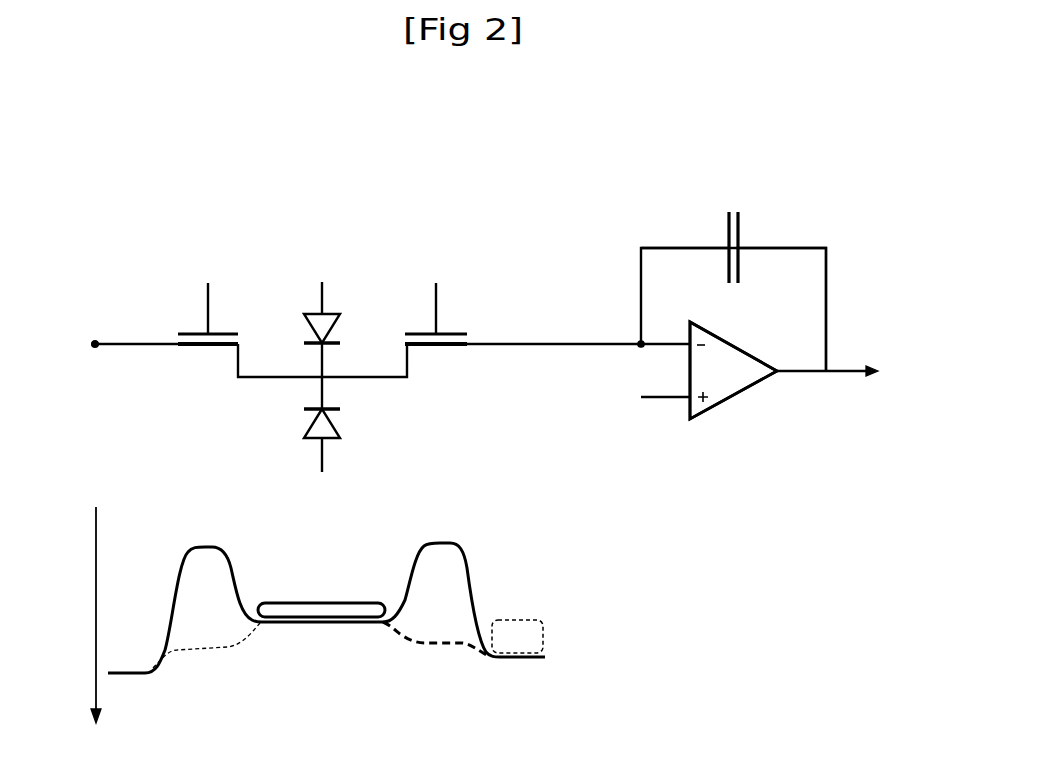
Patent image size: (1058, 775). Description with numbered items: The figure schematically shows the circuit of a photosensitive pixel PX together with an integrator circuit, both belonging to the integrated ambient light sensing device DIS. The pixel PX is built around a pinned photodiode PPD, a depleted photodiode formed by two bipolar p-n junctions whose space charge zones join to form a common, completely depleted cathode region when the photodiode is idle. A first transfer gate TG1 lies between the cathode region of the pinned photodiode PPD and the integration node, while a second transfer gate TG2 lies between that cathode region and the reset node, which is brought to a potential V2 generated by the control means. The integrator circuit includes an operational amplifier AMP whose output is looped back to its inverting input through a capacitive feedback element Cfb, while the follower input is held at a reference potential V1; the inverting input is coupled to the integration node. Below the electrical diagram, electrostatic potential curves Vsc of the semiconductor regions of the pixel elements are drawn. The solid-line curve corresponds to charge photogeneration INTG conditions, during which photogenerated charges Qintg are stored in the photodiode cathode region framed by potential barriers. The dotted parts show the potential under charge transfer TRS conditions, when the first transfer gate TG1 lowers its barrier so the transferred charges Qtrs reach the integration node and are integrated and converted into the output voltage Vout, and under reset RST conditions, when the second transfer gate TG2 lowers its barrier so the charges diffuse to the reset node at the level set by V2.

The photosensitive pixel PX is at (153, 190).
The integrated ambient light sensing device DIS is at (820, 150).
The second transfer gate TG2 is at (208, 300).
The first transfer gate TG1 is at (436, 299).
The pinned photodiode PPD is at (292, 377).
The reset potential V2 is at (95, 330).
The capacitive feedback element Cfb is at (733, 276).
The operational amplifier AMP is at (733, 370).
The reference potential V1 is at (658, 383).
The output voltage Vout is at (840, 358).
The electrostatic potential curves Vsc is at (72, 615).
The reset conditions RST is at (213, 648).
The charge photogeneration conditions INTG is at (413, 572).
The photogenerated charges Qintg is at (325, 612).
The charge transfer conditions TRS is at (423, 645).
The transferred charges Qtrs is at (517, 620).